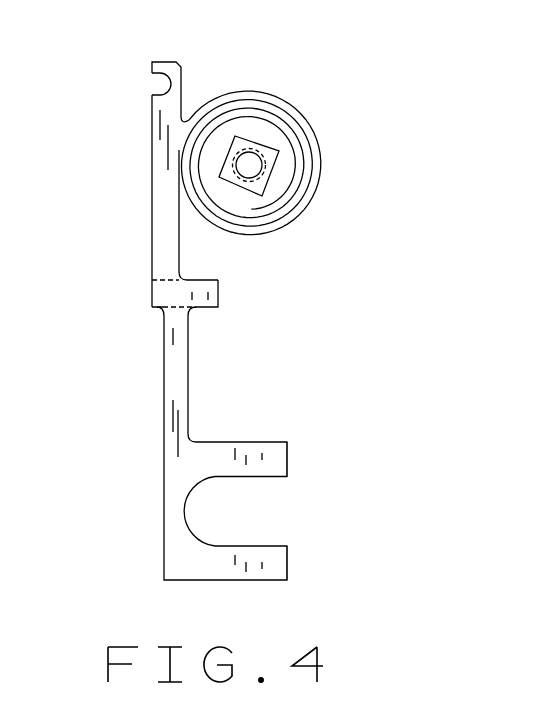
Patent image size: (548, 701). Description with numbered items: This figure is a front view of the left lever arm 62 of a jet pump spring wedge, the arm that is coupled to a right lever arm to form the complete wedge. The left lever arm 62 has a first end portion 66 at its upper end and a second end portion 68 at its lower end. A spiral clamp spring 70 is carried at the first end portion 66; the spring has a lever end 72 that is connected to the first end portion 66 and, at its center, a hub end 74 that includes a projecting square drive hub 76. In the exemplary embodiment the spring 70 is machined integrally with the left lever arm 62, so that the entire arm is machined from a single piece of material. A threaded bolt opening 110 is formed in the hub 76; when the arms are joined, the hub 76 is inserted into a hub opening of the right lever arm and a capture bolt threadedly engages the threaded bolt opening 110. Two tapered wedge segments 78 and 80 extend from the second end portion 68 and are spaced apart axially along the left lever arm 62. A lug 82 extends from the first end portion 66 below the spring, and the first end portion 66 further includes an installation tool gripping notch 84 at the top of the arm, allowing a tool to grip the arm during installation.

The left lever arm 62 is at (381, 129).
The first end portion 66 is at (152, 208).
The second end portion 68 is at (164, 534).
The spiral clamp spring 70 is at (267, 92).
The lever end 72 is at (202, 99).
The hub end 74 is at (262, 212).
The square drive hub 76 is at (270, 182).
The tapered wedge segment 78 is at (256, 442).
The tapered wedge segment 80 is at (262, 546).
The lug 82 is at (218, 298).
The installation tool gripping notch 84 is at (143, 79).
The threaded bolt opening 110 is at (257, 158).